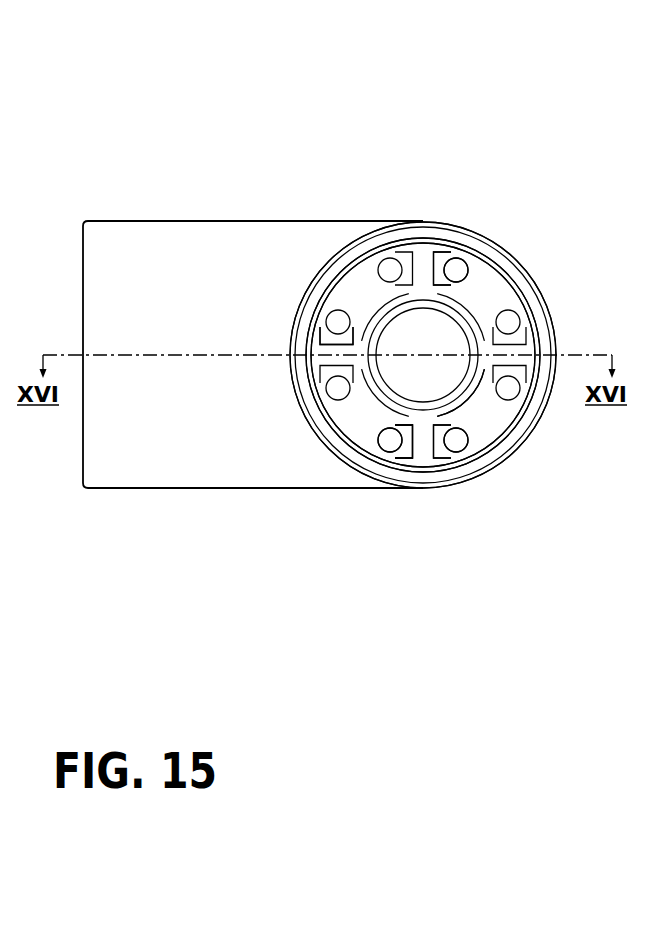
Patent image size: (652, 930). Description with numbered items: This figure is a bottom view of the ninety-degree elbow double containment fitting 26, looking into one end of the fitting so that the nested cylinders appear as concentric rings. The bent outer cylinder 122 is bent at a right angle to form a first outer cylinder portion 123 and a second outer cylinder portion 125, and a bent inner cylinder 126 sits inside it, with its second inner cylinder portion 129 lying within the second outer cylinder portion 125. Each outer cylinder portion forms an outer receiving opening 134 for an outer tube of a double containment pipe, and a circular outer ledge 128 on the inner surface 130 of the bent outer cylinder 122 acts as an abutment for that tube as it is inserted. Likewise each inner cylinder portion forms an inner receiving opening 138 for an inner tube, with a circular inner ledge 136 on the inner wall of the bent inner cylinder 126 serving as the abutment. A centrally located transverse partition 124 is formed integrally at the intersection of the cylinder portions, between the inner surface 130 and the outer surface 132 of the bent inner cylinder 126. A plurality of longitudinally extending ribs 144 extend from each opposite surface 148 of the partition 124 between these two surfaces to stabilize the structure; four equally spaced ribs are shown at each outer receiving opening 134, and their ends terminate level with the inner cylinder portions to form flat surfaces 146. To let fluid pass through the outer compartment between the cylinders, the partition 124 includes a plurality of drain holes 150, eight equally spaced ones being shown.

The 90° elbow double containment fitting 26 is at (568, 411).
The bent outer cylinder 122 is at (137, 221).
The first outer cylinder portion 123 is at (146, 489).
The centrally located transverse partition 124 is at (480, 283).
The second outer cylinder portion 125 is at (551, 299).
The bent inner cylinder 126 is at (461, 403).
The circular outer ledge 128 is at (525, 383).
The second inner cylinder portion 129 is at (487, 408).
The inner surface of the bent outer cylinder 130 is at (412, 447).
The outer surface of the bent inner cylinder 132 is at (483, 301).
The outer receiving opening 134 is at (360, 277).
The circular inner ledge 136 is at (432, 405).
The inner receiving opening 138 is at (415, 330).
The longitudinally extending ribs 144 is at (333, 358).
The flat surfaces 146 is at (368, 308).
The opposite surface of the centrally located transverse partition 148 is at (370, 425).
The drain holes 150 is at (453, 262).